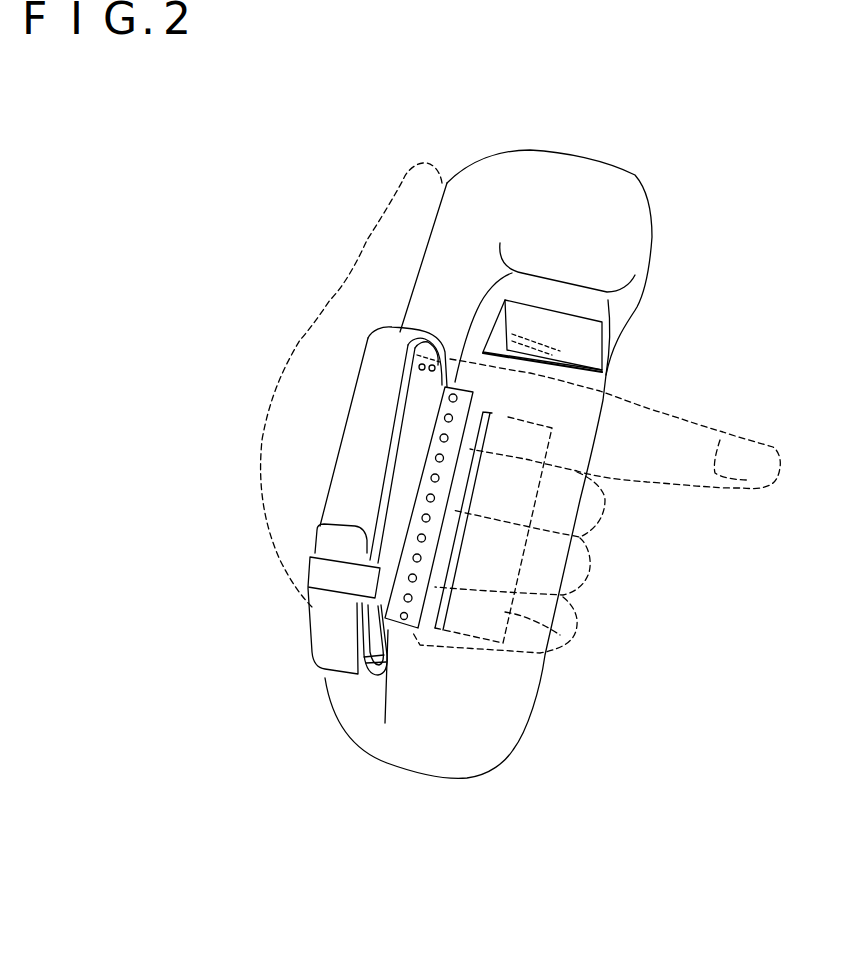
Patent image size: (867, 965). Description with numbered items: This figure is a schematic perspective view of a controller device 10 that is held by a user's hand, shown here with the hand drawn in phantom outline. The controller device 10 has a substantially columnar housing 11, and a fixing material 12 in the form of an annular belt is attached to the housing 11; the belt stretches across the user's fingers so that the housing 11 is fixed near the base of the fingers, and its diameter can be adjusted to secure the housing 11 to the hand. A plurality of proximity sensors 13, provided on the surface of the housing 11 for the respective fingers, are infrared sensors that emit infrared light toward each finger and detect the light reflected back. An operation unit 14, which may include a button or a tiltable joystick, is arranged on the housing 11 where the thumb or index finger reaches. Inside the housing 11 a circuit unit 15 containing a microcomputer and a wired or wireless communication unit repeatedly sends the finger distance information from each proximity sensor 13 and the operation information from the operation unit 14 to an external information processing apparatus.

The controller device 10 is at (343, 813).
The housing 11 is at (642, 185).
The fixing material 12 is at (327, 652).
The proximity sensor 13 is at (410, 632).
The operation unit 14 is at (460, 150).
The circuit unit 15 is at (553, 636).